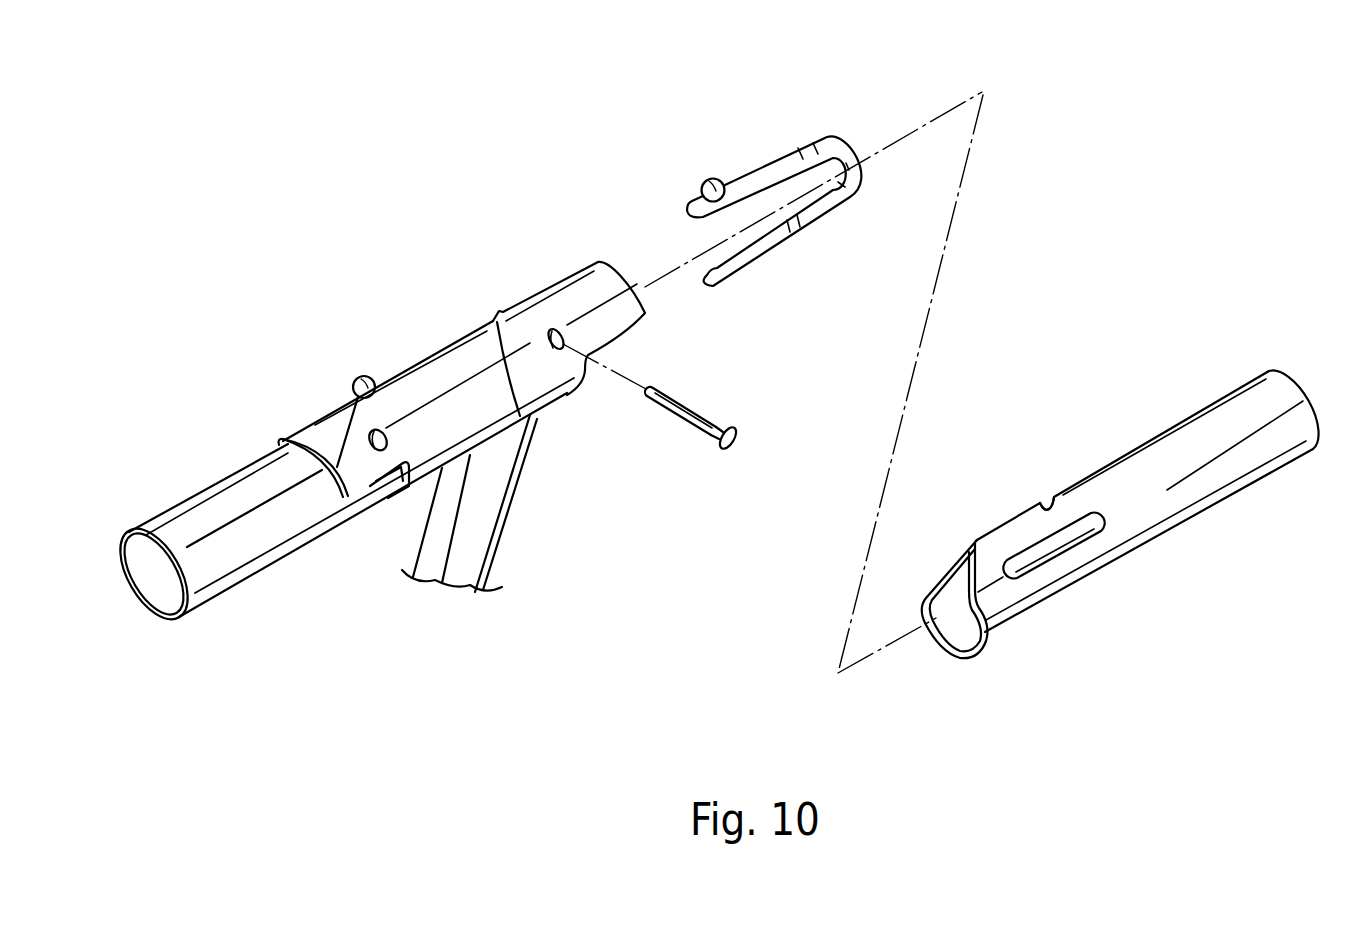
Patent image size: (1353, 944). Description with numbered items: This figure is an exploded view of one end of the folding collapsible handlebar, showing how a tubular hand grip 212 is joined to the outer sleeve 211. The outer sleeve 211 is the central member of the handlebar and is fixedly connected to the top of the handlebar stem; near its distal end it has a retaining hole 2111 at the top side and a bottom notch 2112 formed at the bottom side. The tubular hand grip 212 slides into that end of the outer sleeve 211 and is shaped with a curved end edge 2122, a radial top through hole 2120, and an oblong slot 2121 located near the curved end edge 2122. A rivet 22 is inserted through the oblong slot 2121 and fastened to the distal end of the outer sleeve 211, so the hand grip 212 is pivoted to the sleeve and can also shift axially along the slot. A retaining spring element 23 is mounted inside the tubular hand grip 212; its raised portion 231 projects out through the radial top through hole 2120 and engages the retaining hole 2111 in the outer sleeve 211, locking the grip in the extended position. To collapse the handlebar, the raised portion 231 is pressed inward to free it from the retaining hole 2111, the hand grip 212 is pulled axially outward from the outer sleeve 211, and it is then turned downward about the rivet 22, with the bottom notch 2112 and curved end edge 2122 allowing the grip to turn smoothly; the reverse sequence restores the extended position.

The tubular hand grip 212 is at (270, 565).
The outer sleeve 211 is at (567, 396).
The retaining hole 2111 is at (520, 416).
The bottom notch 2112 is at (374, 486).
The radial top through hole 2120 is at (1047, 500).
The oblong slot 2121 is at (1067, 552).
The curved end edge 2122 is at (955, 577).
The rivet 22 is at (386, 436).
The retaining spring element 23 is at (760, 162).
The raised portion 231 is at (361, 377).